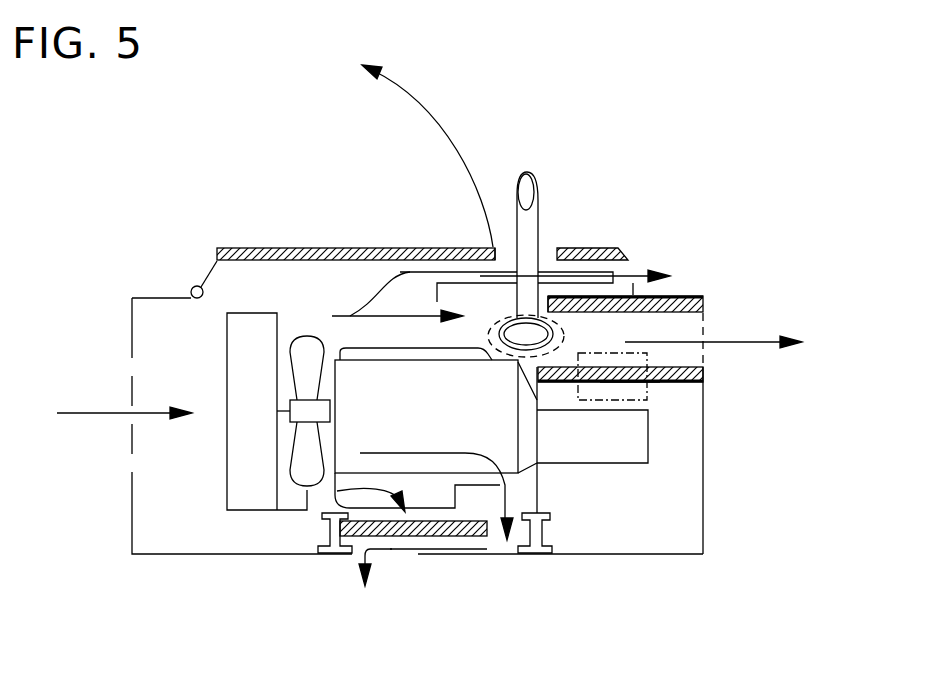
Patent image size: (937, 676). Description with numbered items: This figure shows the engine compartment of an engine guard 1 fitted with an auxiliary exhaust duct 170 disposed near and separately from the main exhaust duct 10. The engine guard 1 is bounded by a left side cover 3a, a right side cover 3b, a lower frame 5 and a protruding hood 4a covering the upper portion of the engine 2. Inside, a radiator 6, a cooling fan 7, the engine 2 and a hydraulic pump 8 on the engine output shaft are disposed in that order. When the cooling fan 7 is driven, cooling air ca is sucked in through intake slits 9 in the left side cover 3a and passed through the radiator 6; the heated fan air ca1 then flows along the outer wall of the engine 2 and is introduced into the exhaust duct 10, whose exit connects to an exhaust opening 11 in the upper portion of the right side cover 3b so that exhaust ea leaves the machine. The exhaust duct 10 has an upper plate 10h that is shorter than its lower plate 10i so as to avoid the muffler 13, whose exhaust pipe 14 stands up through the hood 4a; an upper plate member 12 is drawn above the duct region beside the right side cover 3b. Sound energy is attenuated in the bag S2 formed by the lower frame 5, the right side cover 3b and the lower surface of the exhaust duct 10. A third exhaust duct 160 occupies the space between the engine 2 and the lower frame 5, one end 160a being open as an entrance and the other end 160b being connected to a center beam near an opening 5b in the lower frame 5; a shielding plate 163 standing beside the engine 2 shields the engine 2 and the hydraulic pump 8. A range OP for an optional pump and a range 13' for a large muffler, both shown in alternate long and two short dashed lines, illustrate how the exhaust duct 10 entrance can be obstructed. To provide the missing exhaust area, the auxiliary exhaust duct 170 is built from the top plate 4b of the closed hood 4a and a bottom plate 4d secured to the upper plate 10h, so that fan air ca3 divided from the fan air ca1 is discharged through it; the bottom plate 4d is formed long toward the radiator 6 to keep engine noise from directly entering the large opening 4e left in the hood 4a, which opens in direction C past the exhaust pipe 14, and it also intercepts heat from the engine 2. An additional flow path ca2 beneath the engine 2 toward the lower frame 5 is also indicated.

The engine guard 1 is at (308, 222).
The engine 2 is at (392, 427).
The left side cover 3a is at (130, 312).
The right side cover 3b is at (705, 487).
The protruding hood 4a is at (352, 240).
The top plate 4b is at (607, 248).
The bottom plate (shielding plate) 4d is at (552, 296).
The opening 4e is at (505, 247).
The lower frame 5 is at (408, 557).
The opening 5b is at (383, 558).
The radiator 6 is at (257, 322).
The cooling fan 7 is at (302, 332).
The hydraulic pump 8 is at (622, 440).
The intake slits 9 is at (130, 392).
The exhaust duct 10 is at (630, 402).
The upper plate 10h is at (578, 295).
The lower plate 10i is at (672, 397).
The exhaust opening 11 is at (663, 367).
The upper partition plate 12 is at (670, 296).
The muffler 13 is at (469, 284).
The range for large muffler 13' is at (494, 281).
The exhaust pipe 14 is at (530, 170).
The third exhaust duct 160 is at (337, 491).
The one end of third exhaust duct 160a is at (486, 545).
The other end of third exhaust duct 160b is at (345, 545).
The shielding plate 163 is at (540, 478).
The auxiliary exhaust duct 170 is at (632, 270).
The opening direction of hood C is at (427, 143).
The range for optional pump OP is at (648, 427).
The bag S2 is at (668, 510).
The cooling air ca is at (80, 416).
The fan air ca1 is at (417, 316).
The cooling air flow 2 ca2 is at (445, 453).
The fan air ca3 is at (408, 273).
The exhaust ea is at (763, 342).